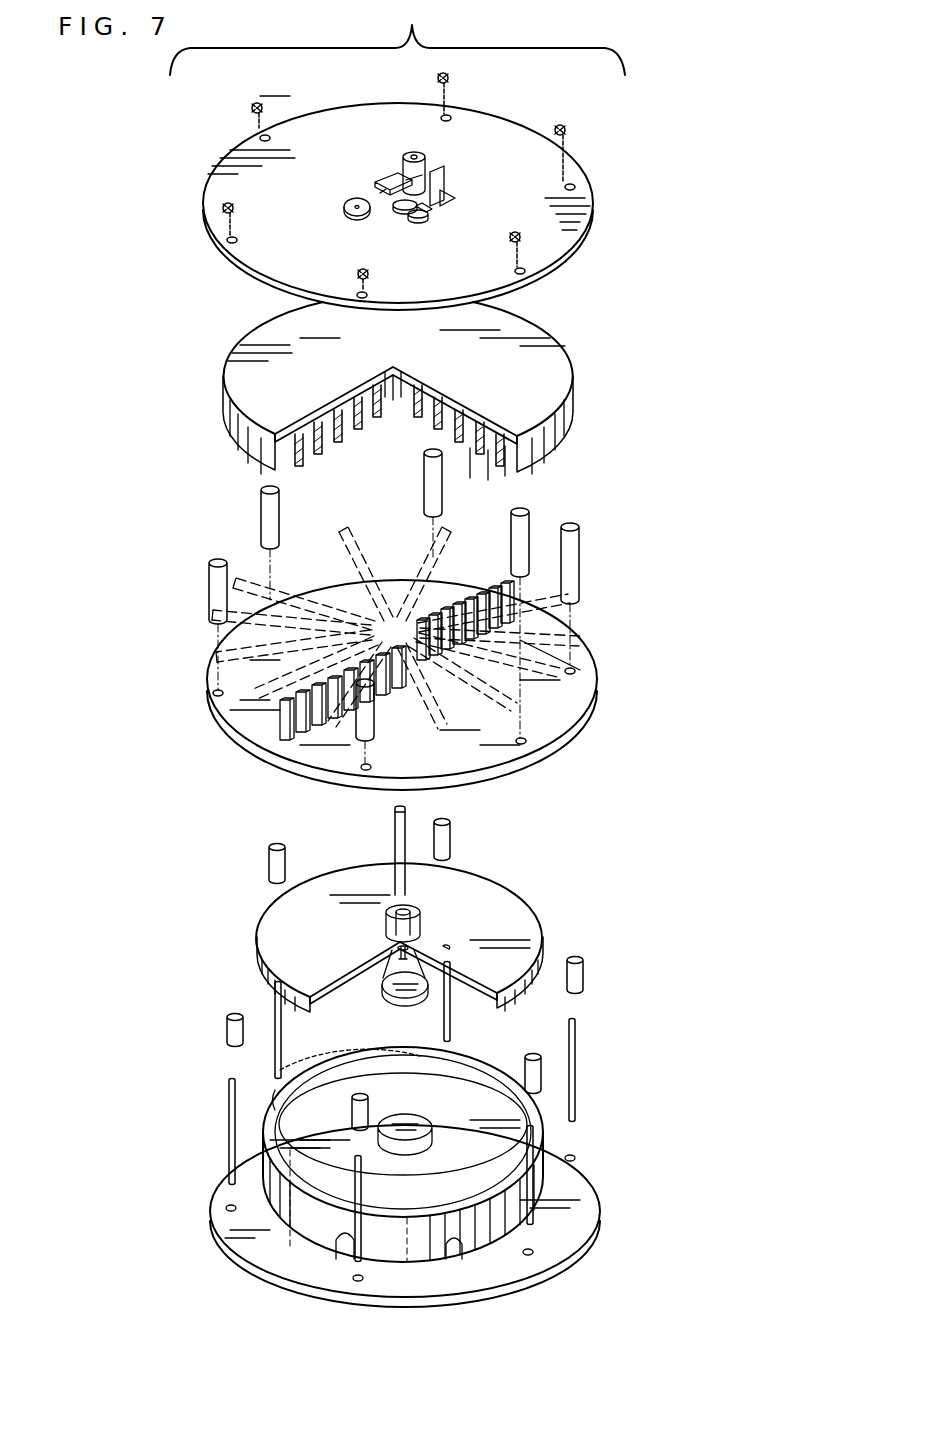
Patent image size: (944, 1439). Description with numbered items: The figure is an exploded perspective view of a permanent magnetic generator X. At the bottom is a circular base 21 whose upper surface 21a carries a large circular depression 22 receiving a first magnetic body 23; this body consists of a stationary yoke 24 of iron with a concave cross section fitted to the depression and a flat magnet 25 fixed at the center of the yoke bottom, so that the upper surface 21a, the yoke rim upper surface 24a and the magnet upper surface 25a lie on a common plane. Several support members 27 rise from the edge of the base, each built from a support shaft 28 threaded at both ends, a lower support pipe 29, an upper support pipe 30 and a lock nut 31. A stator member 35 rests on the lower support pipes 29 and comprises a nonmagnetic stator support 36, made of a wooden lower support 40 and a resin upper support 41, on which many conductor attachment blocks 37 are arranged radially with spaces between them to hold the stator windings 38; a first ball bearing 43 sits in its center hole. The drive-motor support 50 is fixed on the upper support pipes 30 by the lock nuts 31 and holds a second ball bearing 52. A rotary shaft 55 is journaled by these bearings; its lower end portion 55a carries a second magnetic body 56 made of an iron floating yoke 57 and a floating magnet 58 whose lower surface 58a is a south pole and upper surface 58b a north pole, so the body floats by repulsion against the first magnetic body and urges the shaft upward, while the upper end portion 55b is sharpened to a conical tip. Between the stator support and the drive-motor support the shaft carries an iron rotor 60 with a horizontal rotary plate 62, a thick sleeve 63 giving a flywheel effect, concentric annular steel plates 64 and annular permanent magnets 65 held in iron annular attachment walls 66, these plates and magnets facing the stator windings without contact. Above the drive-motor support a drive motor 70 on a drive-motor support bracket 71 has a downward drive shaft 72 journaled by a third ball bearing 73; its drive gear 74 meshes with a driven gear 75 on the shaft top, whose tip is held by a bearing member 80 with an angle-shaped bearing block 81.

The permanent magnetic generator X is at (667, 241).
The circular base 21 is at (430, 1216).
The upper surface of base 21a is at (585, 1240).
The circular depression 22 is at (458, 1248).
The first magnetic body 23 is at (403, 1149).
The stationary yoke 24 is at (365, 1050).
The upper surface of circumferential edge portion of stationary yoke 24a is at (330, 1080).
The flat magnet 25 is at (403, 1124).
The upper surface of magnet 25a is at (420, 1123).
The support member 27 is at (587, 1017).
The support shaft 28 is at (275, 1000).
The lower support pipe 29 is at (452, 840).
The upper support pipe 30 is at (262, 522).
The lock nut 31 is at (252, 108).
The stator member 35 is at (585, 636).
The stator support 36 is at (411, 658).
The conductor attachment block 37 is at (394, 548).
The stator winding 38 is at (275, 760).
The lower support 40 is at (530, 772).
The upper support 41 is at (592, 680).
The first ball bearing 43 is at (382, 700).
The drive-motor support 50 is at (590, 216).
The second ball bearing 52 is at (400, 213).
The rotary shaft 55 is at (395, 850).
The lower end portion of rotary shaft 55a is at (420, 908).
The upper end portion of rotary shaft 55b is at (406, 812).
The second magnetic body 56 is at (366, 936).
The floating yoke 57 is at (510, 892).
The floating magnet 58 is at (393, 954).
The lower surface of floating magnet 58a is at (404, 1004).
The upper surface of floating magnet 58b is at (445, 945).
The rotor 60 is at (423, 410).
The rotary plate 62 is at (560, 375).
The sleeve 63 is at (420, 378).
The annular steel plate 64 is at (415, 420).
The annular permanent magnet 65 is at (356, 400).
The annular attachment wall 66 is at (388, 370).
The drive motor 70 is at (410, 155).
The drive-motor support bracket 71 is at (445, 175).
The drive shaft 72 is at (452, 202).
The third ball bearing 73 is at (434, 210).
The drive gear 74 is at (420, 220).
The driven gear 75 is at (345, 212).
The bearing member 80 is at (385, 175).
The bearing block 81 is at (374, 183).